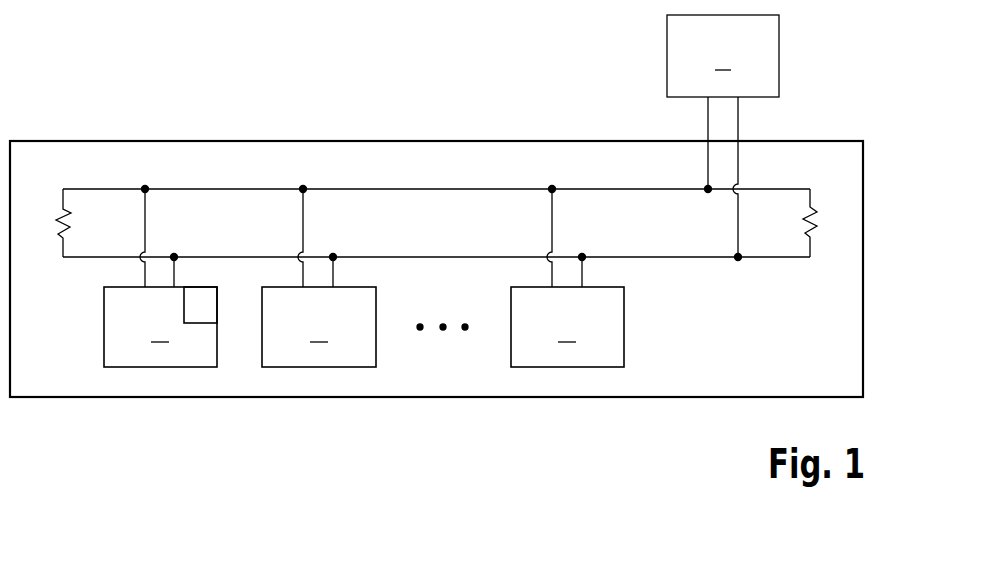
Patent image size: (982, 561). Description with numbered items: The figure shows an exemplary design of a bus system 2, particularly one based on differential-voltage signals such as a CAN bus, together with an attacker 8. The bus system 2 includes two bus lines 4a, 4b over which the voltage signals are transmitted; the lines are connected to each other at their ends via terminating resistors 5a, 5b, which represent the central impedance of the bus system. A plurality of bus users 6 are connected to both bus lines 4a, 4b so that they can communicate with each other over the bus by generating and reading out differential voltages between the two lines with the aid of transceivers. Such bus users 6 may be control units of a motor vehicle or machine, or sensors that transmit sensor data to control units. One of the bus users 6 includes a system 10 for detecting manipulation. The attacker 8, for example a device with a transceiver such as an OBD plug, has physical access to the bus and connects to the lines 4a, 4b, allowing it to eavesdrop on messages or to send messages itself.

The bus system 2 is at (92, 141).
The bus line 4a is at (397, 189).
The bus line 4b is at (435, 257).
The terminating resistor 5a is at (62, 213).
The terminating resistor 5b is at (812, 212).
The bus user 6 is at (364, 278).
The attacker 8 is at (723, 136).
The system for detecting manipulation 10 is at (200, 313).